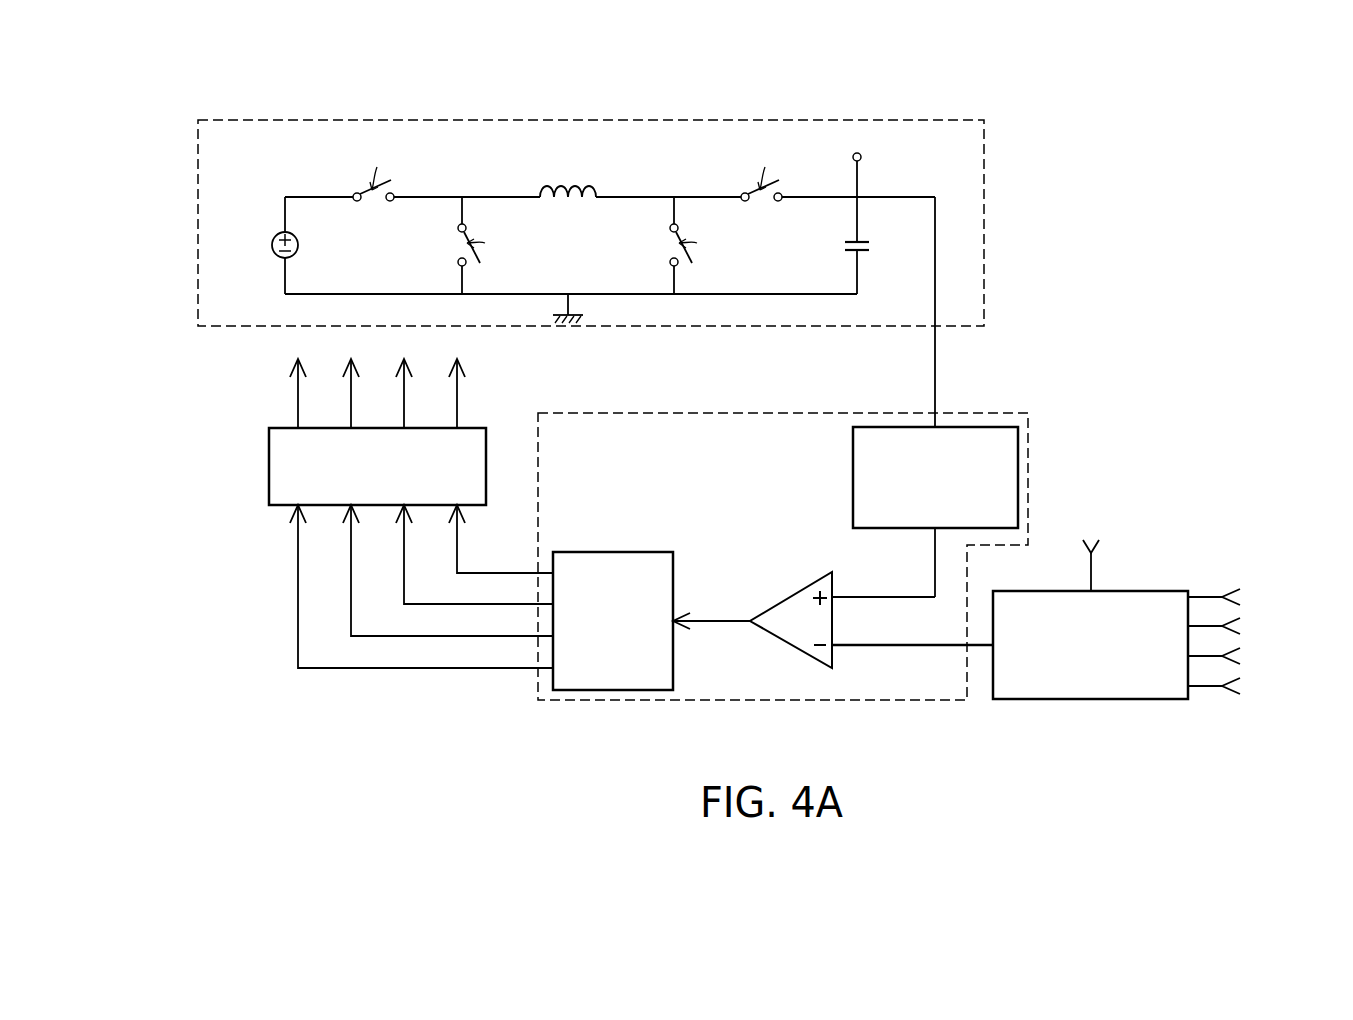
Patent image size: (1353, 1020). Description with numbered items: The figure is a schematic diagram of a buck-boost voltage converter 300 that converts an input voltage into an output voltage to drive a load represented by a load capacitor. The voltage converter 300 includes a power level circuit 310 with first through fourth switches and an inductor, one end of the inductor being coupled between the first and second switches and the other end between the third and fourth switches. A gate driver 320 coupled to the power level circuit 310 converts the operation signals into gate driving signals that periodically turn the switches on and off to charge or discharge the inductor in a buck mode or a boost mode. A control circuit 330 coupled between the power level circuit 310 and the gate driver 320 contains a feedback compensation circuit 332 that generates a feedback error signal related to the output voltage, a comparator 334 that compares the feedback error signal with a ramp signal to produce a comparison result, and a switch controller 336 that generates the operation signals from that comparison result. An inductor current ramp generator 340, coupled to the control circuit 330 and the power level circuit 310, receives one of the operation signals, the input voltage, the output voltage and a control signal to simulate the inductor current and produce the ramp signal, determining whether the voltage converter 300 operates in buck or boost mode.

The voltage converter 300 is at (153, 88).
The power level circuit 310 is at (596, 119).
The gate driver 320 is at (269, 465).
The control circuit 330 is at (758, 412).
The feedback compensation circuit 332 is at (853, 476).
The comparator 334 is at (798, 588).
The switch controller 336 is at (614, 552).
The inductor current ramp generator 340 is at (1090, 700).